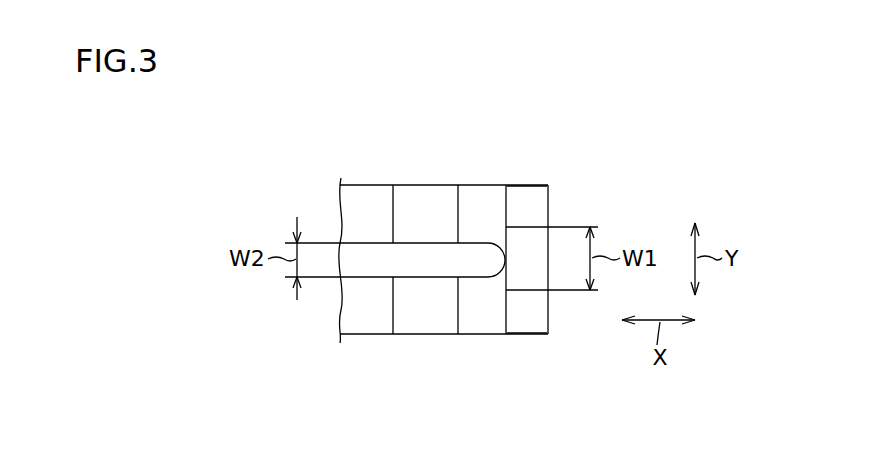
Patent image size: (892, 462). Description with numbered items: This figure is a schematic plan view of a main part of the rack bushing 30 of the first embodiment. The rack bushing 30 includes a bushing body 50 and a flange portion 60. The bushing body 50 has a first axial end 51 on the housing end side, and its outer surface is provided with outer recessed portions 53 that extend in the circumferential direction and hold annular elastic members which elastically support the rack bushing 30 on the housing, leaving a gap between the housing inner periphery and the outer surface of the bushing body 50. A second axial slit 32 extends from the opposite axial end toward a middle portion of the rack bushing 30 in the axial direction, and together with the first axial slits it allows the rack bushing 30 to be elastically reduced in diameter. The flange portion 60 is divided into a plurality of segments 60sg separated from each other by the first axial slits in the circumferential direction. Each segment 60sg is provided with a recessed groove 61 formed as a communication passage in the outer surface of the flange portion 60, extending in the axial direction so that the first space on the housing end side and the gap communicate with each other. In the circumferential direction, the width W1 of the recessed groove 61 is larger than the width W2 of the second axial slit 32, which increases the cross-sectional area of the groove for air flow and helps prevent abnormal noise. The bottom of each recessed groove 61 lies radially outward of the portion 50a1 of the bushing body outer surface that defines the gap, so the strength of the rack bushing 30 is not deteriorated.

The rack bushing 30 is at (562, 166).
The second axial slit 32 is at (425, 277).
The bushing body 50 is at (480, 183).
The portion that defines the gap S on the outer surface of the bushing body 50a1 is at (478, 310).
The first axial end 51 is at (495, 334).
The outer recessed portion 53 is at (395, 208).
The flange portion 60 is at (525, 183).
The segment 60sg is at (538, 201).
The recessed groove 61 is at (522, 290).